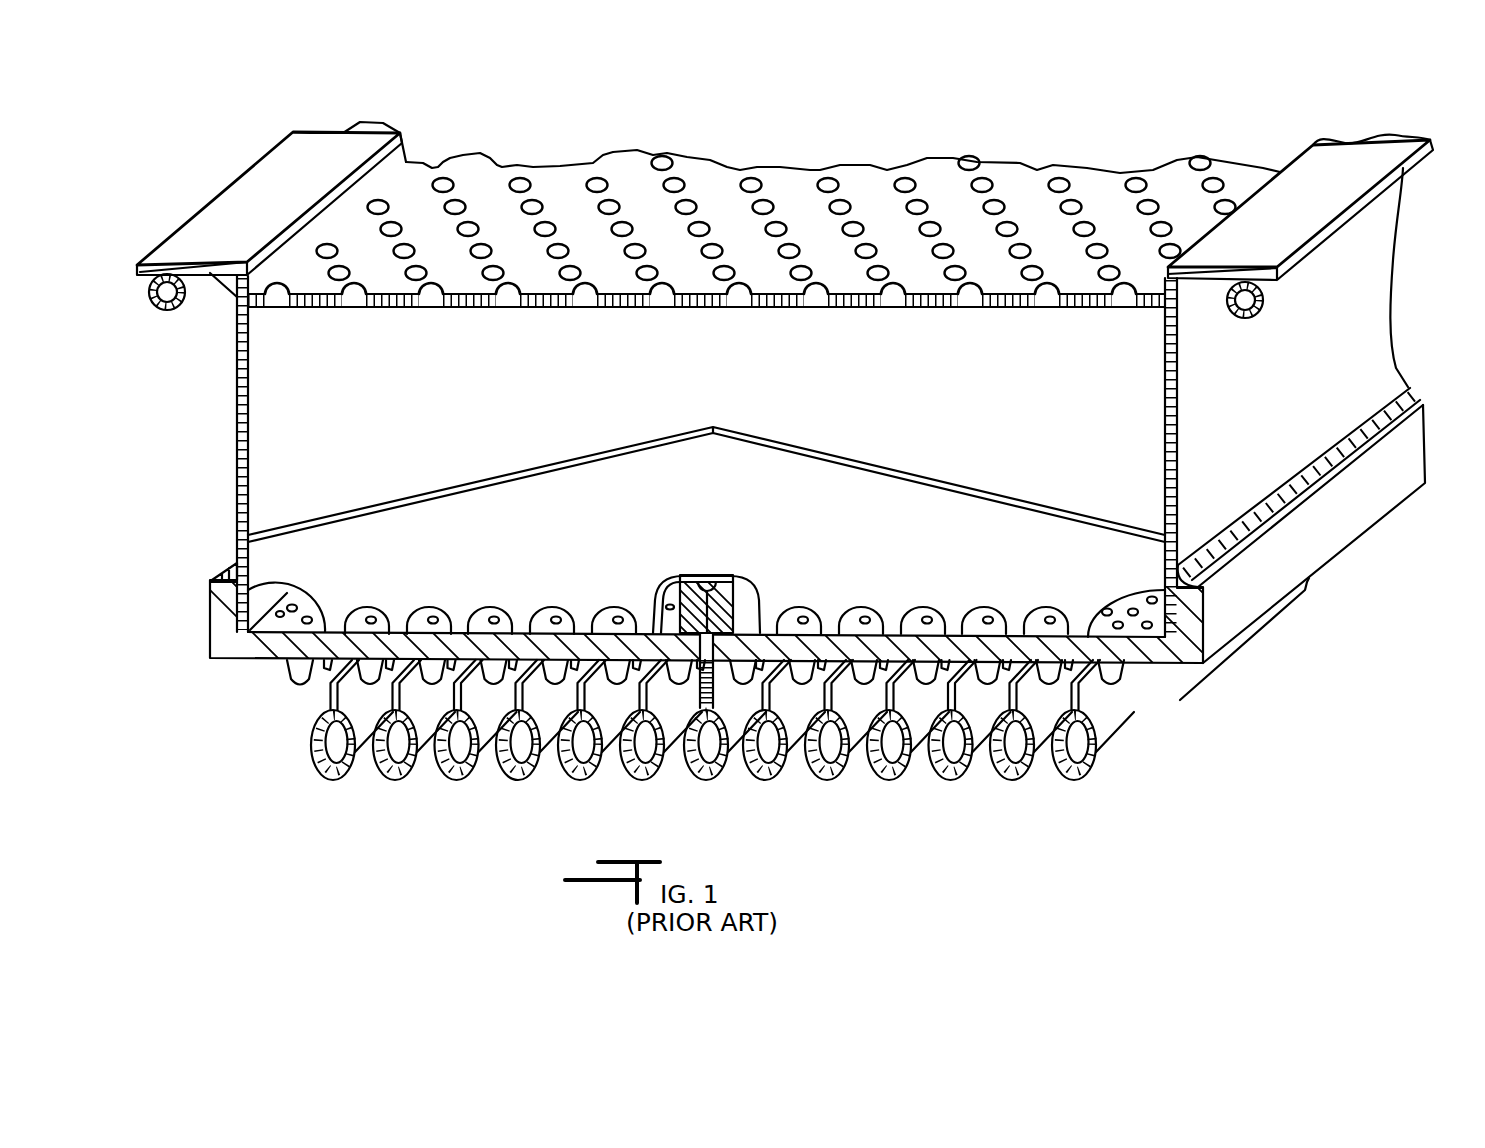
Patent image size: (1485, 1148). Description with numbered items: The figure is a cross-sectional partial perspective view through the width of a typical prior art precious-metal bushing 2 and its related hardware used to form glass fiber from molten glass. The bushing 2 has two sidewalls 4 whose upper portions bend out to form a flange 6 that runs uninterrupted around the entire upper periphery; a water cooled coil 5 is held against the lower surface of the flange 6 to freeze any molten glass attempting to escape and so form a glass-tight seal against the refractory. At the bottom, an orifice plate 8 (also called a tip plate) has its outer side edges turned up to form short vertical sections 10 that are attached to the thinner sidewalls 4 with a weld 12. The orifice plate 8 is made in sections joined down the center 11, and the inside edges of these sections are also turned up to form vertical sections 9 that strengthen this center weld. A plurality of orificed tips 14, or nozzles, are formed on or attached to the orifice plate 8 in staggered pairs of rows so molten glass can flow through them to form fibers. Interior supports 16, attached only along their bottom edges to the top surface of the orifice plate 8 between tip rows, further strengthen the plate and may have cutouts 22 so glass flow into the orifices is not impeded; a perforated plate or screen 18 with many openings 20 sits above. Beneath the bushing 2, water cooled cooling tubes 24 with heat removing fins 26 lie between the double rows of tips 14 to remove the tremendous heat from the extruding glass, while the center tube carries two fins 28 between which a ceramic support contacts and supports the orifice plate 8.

The bushing 2 is at (1182, 412).
The sidewall 4 is at (1393, 372).
The water cooled coil 5 is at (163, 312).
The flange 6 is at (1323, 158).
The orifice plate 8 is at (255, 648).
The vertical section 9 is at (718, 605).
The turned up side 10 is at (210, 592).
The center weld 11 is at (697, 585).
The weld 12 is at (228, 565).
The orificed tip 14 is at (300, 682).
The internal support 16 is at (490, 522).
The perforated plate 18 is at (547, 180).
The opening 20 is at (740, 182).
The cutout 22 is at (657, 615).
The cooling tube 24 is at (337, 778).
The heat removing fin 26 is at (1020, 664).
The fin 28 is at (715, 703).